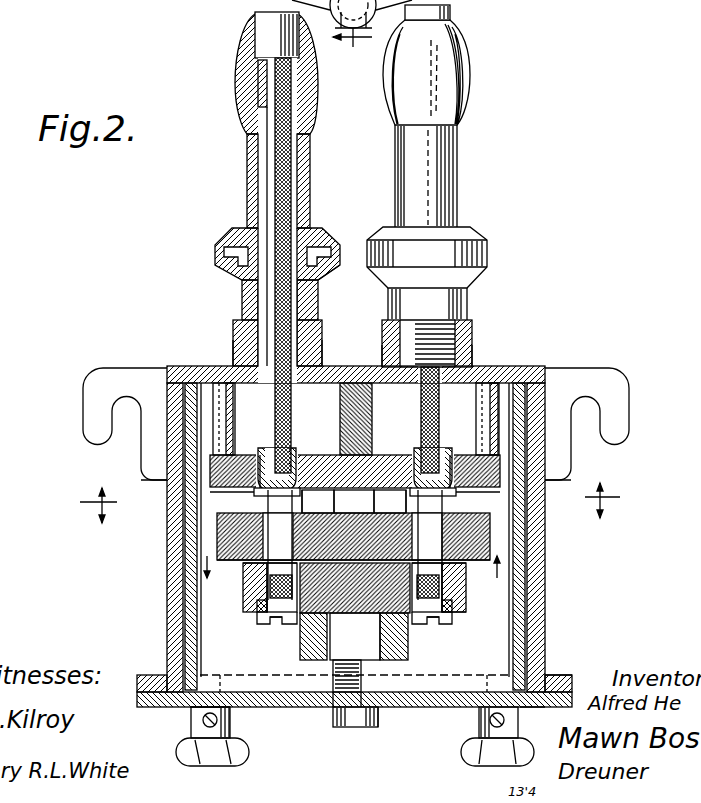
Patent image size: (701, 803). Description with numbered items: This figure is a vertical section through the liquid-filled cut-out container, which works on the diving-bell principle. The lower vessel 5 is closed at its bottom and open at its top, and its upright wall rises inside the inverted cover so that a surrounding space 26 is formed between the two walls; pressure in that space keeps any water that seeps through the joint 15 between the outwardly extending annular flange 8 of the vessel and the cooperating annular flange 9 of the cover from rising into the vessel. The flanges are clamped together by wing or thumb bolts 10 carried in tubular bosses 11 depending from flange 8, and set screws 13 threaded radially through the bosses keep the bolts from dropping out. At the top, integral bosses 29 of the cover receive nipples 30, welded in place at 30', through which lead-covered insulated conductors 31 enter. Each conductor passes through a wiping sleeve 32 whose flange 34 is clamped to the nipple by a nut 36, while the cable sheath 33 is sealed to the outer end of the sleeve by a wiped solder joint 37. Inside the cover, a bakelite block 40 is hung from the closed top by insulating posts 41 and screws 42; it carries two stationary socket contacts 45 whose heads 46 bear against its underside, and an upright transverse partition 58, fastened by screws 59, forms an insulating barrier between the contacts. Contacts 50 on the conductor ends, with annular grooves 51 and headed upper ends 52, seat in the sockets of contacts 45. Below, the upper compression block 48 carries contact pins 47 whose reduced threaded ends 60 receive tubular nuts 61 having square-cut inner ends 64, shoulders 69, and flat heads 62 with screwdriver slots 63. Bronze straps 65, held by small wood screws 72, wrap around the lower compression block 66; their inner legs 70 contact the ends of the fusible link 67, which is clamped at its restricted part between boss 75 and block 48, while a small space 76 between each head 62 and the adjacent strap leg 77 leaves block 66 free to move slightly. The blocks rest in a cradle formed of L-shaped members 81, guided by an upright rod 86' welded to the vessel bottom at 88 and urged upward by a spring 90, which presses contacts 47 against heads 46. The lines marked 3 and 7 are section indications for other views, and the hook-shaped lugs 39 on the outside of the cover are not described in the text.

The cable sheath 33 is at (257, 22).
The wiped solder joint 37 is at (242, 72).
The wiping sleeve 32 is at (250, 172).
The insulated conductor 31 is at (293, 186).
The section line 3 is at (352, 32).
The flange 34 is at (220, 247).
The nut 36 is at (226, 262).
The nipple 30 is at (354, 300).
The weld 30' is at (384, 338).
The boss 29 is at (233, 337).
The filler post 41 is at (226, 368).
The mounting bracket 39 is at (88, 410).
The block of insulation 40 is at (212, 465).
The screw 42 is at (183, 482).
The section line 7 is at (354, 503).
The stationary contact 45 is at (308, 501).
The flange or head 46 is at (401, 501).
The screw 59 is at (354, 501).
The surrounding space 26 is at (525, 512).
The vessel 5 is at (196, 510).
The wood screw 72 is at (186, 607).
The contact 47 is at (218, 533).
The upper compression block 48 is at (298, 560).
The contact 50 is at (268, 450).
The transverse partition 58 is at (341, 398).
The flanged upper end 52 is at (302, 460).
The annular groove 51 is at (312, 460).
The annular flange 9 is at (560, 660).
The annular flange 8 is at (369, 651).
The inner leg of strap 70 is at (262, 570).
The square-cut inner end of nut 64 is at (268, 585).
The reduced threaded portion 60 is at (258, 598).
The strap 65 is at (262, 612).
The space 76 is at (265, 620).
The cylindrical nut 61 is at (272, 624).
The screw driver slot 63 is at (283, 626).
The shoulder 69 is at (300, 626).
The flat head 62 is at (303, 616).
The strap leg 77 is at (466, 612).
The fusible link 67 is at (328, 642).
The circular boss 75 is at (358, 651).
The lower compression block 66 is at (355, 636).
The L-shaped member 81 is at (362, 675).
The joint 15 is at (369, 676).
The set screw 13 is at (203, 719).
The tubular boss 11 is at (229, 731).
The wing bolt 10 is at (226, 757).
The spring 90 is at (333, 704).
The weld 88 is at (338, 730).
The guide rod 86' is at (392, 722).